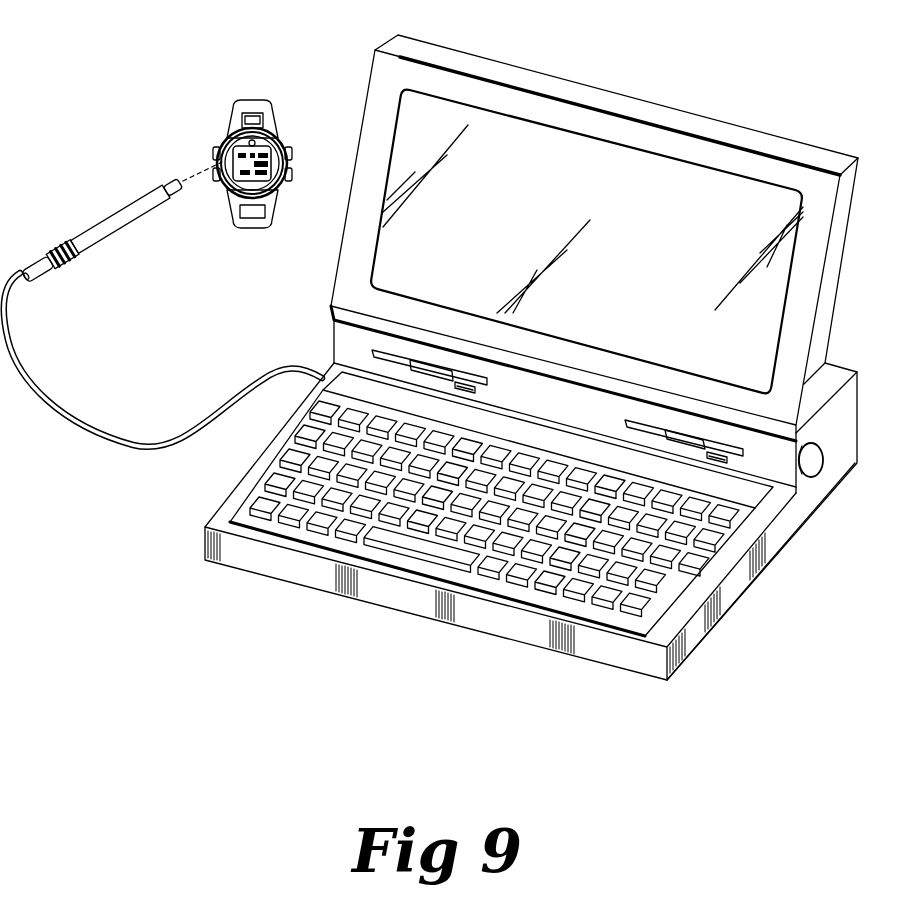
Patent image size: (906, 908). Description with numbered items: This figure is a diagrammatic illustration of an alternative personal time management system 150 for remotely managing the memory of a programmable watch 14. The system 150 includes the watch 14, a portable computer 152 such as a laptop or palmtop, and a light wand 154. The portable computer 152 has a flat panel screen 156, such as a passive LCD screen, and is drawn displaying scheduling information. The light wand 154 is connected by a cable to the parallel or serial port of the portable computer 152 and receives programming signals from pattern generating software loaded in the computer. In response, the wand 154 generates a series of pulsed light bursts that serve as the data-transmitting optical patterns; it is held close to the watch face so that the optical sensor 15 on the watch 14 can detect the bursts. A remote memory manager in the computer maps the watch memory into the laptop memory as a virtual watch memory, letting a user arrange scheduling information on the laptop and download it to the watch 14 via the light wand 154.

The personal time management system 150 is at (110, 106).
The programmable watch 14 is at (275, 123).
The optical sensor 15 is at (274, 139).
The light wand 154 is at (97, 230).
The flat panel screen 156 is at (498, 127).
The portable computer 152 is at (487, 620).